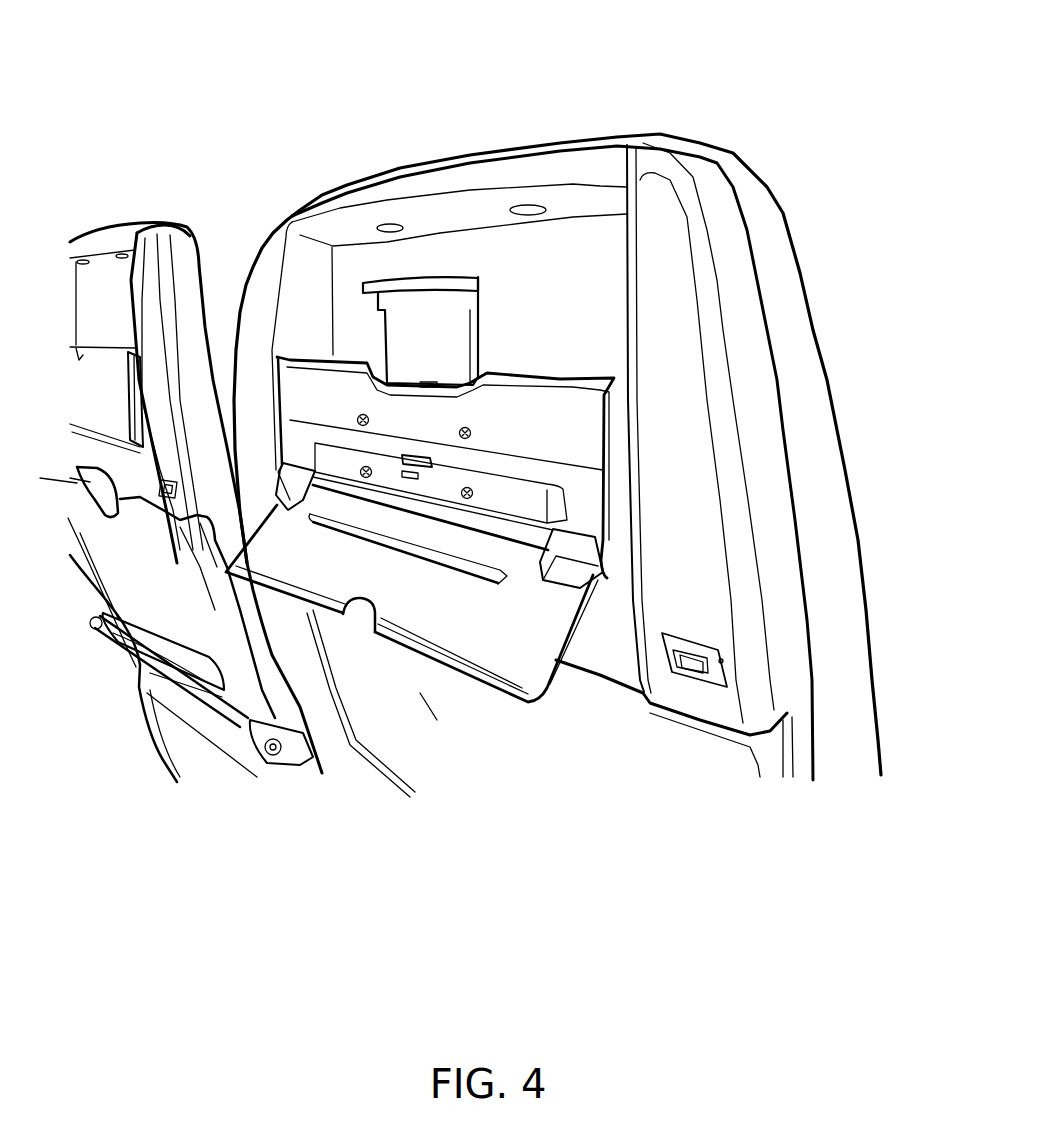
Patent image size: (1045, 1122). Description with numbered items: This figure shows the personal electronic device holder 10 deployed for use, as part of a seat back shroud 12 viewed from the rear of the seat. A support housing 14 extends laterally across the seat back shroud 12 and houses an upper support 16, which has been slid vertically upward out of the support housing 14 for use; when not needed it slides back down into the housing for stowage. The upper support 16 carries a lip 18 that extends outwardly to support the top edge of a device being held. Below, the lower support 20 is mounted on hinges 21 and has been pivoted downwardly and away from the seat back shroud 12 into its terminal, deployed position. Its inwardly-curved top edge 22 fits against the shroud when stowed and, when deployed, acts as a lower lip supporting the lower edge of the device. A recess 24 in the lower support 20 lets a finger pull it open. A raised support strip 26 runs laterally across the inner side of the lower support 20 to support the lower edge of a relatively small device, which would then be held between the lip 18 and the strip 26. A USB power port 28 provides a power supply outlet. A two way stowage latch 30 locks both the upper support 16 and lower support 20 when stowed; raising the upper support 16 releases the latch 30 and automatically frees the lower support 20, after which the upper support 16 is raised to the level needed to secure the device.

The personal electronic device holder 10 is at (788, 127).
The seat back shroud 12 is at (558, 237).
The support housing 14 is at (565, 413).
The upper support 16 is at (425, 313).
The lip 18 is at (410, 280).
The lower support 20 is at (487, 650).
The hinges 21 is at (300, 473).
The inwardly-curved top edge 22 is at (292, 590).
The recess 24 is at (373, 637).
The raised support strip 26 is at (497, 587).
The USB power port 28 is at (716, 682).
The two way stowage latch 30 is at (410, 453).